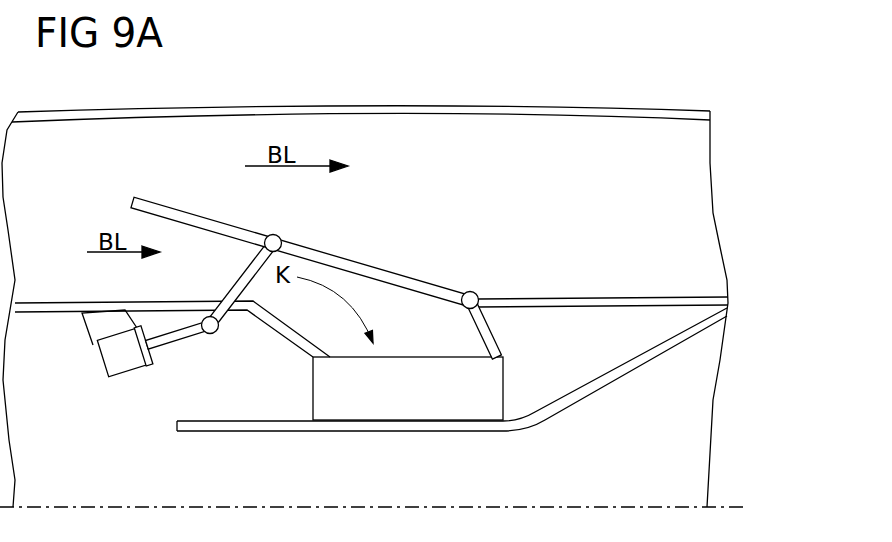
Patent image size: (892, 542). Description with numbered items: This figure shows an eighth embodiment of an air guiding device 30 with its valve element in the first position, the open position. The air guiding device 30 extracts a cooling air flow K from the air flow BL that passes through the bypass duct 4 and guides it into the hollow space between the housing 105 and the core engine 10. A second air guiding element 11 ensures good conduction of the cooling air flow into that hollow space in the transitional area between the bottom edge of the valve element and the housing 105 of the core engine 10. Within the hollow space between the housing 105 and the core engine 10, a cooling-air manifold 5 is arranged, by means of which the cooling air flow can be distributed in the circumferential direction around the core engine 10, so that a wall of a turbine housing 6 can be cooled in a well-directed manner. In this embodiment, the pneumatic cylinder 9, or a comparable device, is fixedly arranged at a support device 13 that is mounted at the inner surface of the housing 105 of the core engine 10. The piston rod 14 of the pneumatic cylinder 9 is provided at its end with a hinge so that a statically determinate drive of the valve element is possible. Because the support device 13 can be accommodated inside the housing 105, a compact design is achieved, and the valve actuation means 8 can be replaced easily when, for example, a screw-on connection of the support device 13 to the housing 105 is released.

The bypass duct 4 is at (602, 206).
The core engine 10 is at (598, 484).
The housing 105 is at (50, 303).
The turbine housing 6 is at (610, 376).
The cooling-air manifold 5 is at (480, 382).
The valve actuation means 8 is at (151, 347).
The pneumatic cylinder 9 is at (123, 360).
The support device 13 is at (95, 328).
The piston rod 14 is at (185, 335).
The air guiding device 30 is at (421, 238).
The second air guiding element 11 is at (487, 337).